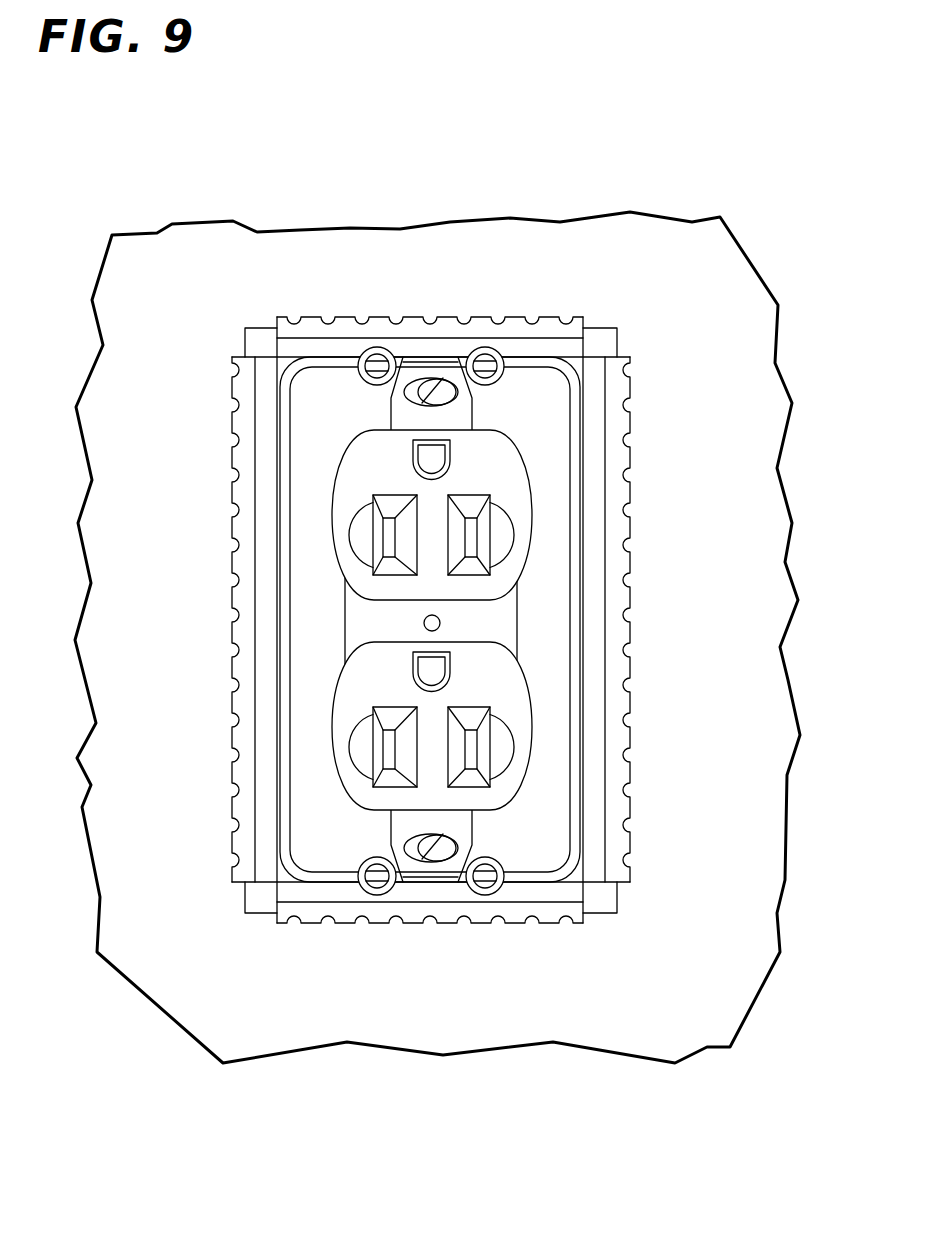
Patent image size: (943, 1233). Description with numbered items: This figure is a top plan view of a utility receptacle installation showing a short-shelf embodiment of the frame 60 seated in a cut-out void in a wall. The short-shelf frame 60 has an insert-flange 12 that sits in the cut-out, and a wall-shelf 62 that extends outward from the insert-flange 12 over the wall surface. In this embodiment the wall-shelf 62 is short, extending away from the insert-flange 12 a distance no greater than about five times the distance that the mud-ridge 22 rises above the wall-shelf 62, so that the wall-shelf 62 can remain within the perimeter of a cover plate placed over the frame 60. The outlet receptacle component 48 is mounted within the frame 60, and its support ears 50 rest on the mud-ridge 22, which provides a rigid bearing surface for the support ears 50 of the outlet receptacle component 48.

The insert-flange 12 is at (330, 878).
The mud-ridge 22 is at (428, 892).
The outlet receptacle component 48 is at (530, 718).
The support ears 50 is at (488, 347).
The short-shelf frame 60 is at (645, 369).
The wall-shelf 62 is at (510, 924).